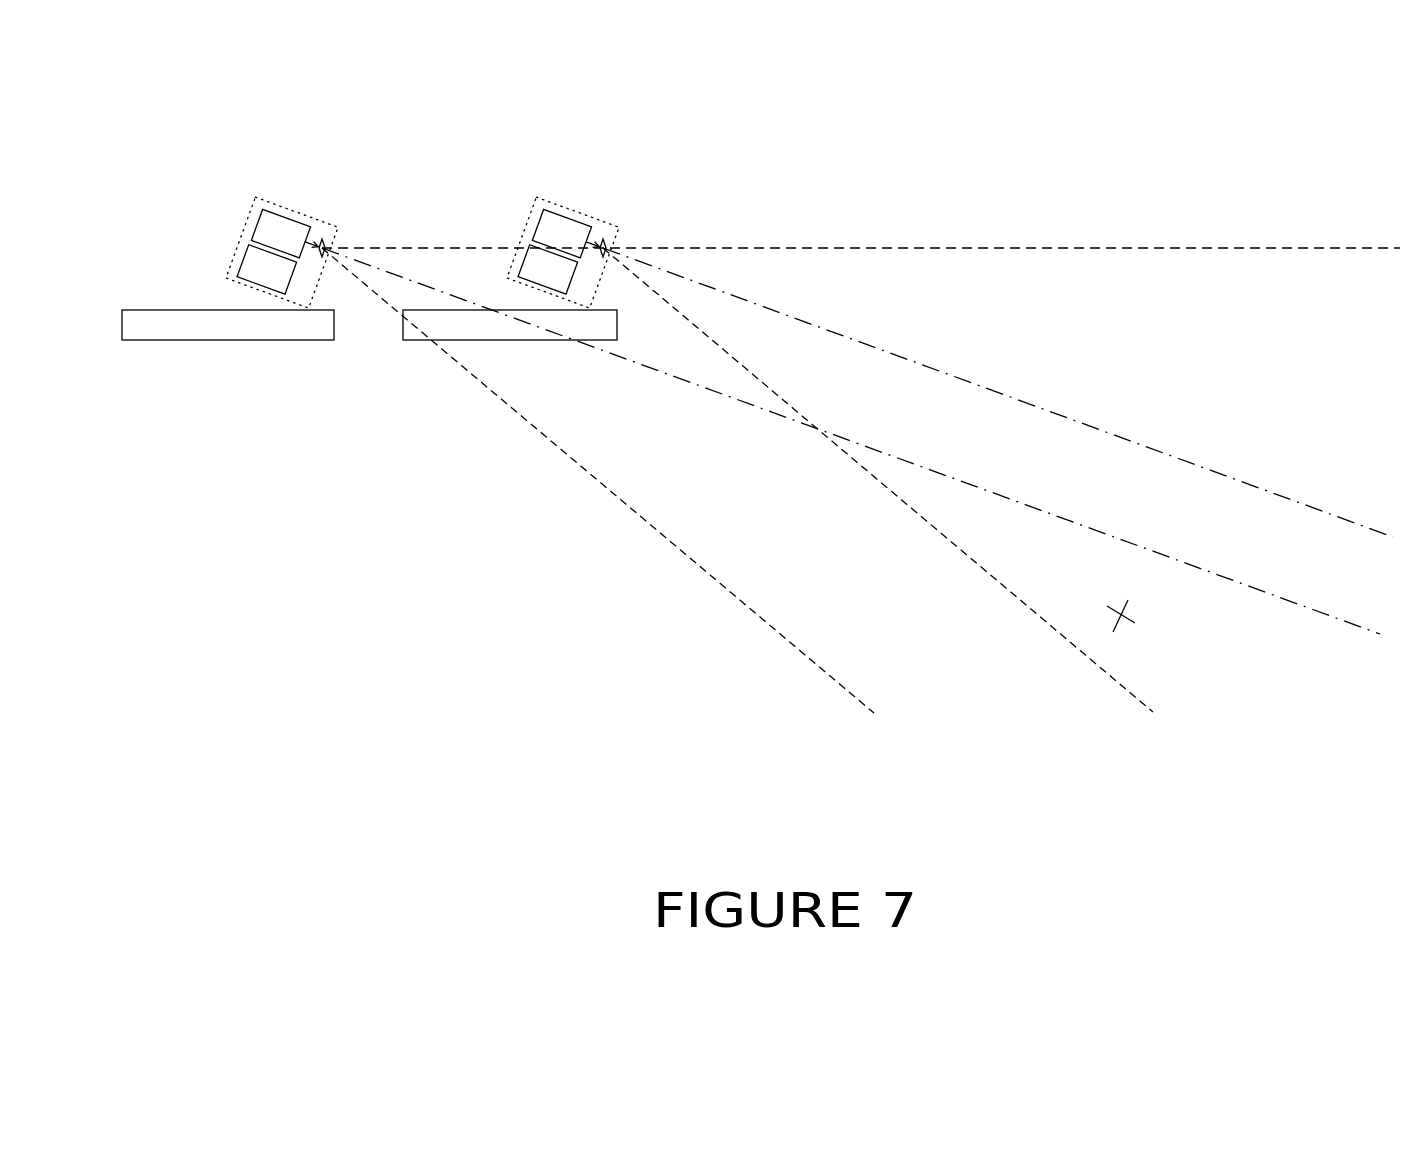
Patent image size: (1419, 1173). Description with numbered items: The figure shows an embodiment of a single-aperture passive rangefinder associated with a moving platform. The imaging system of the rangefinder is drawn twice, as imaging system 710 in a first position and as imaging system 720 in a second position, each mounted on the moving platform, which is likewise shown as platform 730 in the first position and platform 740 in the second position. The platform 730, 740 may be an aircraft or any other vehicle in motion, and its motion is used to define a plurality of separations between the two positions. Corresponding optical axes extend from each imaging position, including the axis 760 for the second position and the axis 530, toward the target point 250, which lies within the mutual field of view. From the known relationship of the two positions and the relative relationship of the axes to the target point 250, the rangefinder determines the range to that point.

The imaging system in a first position 710 is at (312, 205).
The imaging system in a second position 720 is at (583, 197).
The moving platform in a first position 730 is at (198, 345).
The moving platform in a second position 740 is at (417, 340).
The optical axis of second imaging device 530 is at (1170, 452).
The optical axis of the imaging system in the second position 760 is at (1305, 615).
The target point 250 is at (1143, 630).